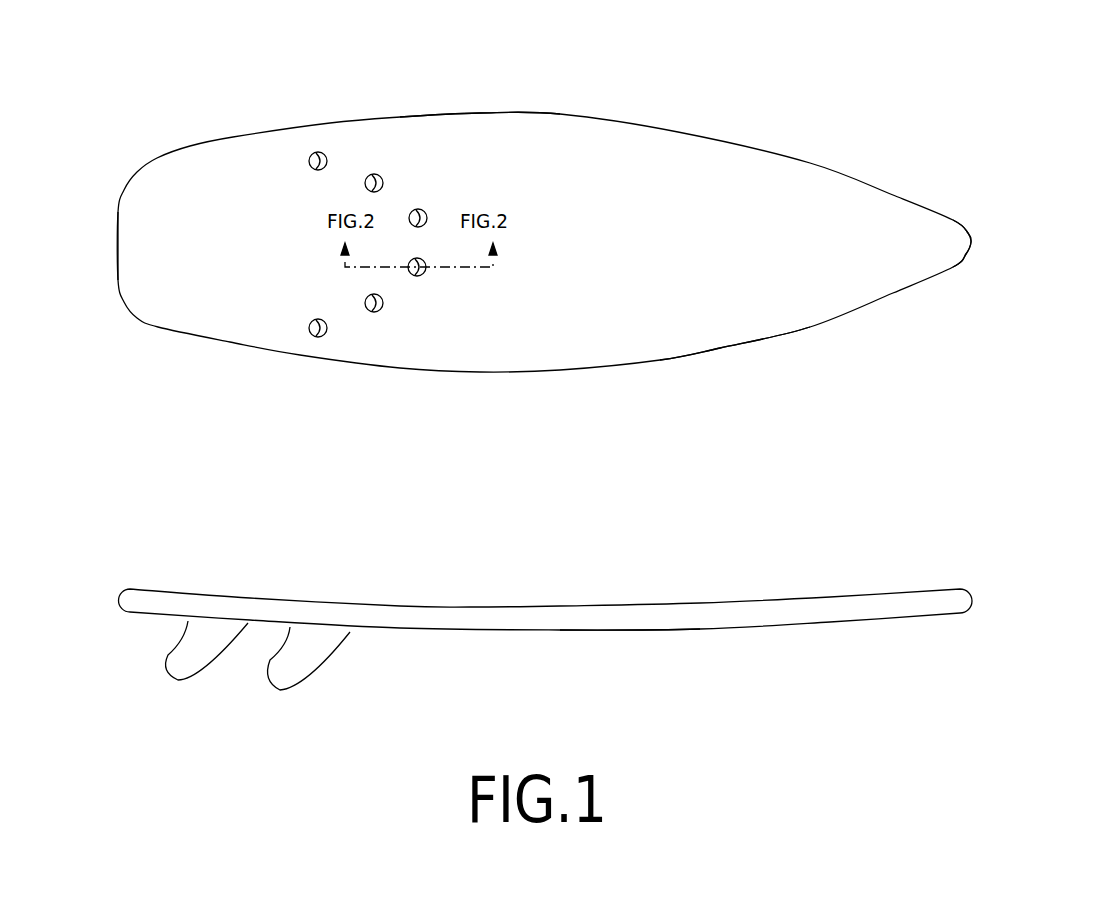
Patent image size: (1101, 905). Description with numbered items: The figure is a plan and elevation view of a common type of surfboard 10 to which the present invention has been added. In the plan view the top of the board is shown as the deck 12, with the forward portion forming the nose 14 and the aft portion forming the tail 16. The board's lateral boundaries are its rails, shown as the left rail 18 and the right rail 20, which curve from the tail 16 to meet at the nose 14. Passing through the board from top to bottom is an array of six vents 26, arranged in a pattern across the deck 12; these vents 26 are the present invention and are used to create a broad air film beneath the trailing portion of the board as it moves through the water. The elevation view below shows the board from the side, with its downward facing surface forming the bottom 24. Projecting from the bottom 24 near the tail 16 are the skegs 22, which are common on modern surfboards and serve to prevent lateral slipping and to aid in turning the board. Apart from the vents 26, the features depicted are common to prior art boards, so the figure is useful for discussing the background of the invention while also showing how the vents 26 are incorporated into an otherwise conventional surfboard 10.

The surfboard 10 is at (862, 135).
The deck 12 is at (637, 192).
The nose 14 is at (971, 241).
The tail 16 is at (118, 212).
The left rail 18 is at (480, 115).
The right rail 20 is at (720, 348).
The skegs 22 is at (297, 655).
The bottom 24 is at (667, 630).
The vents 26 is at (413, 208).